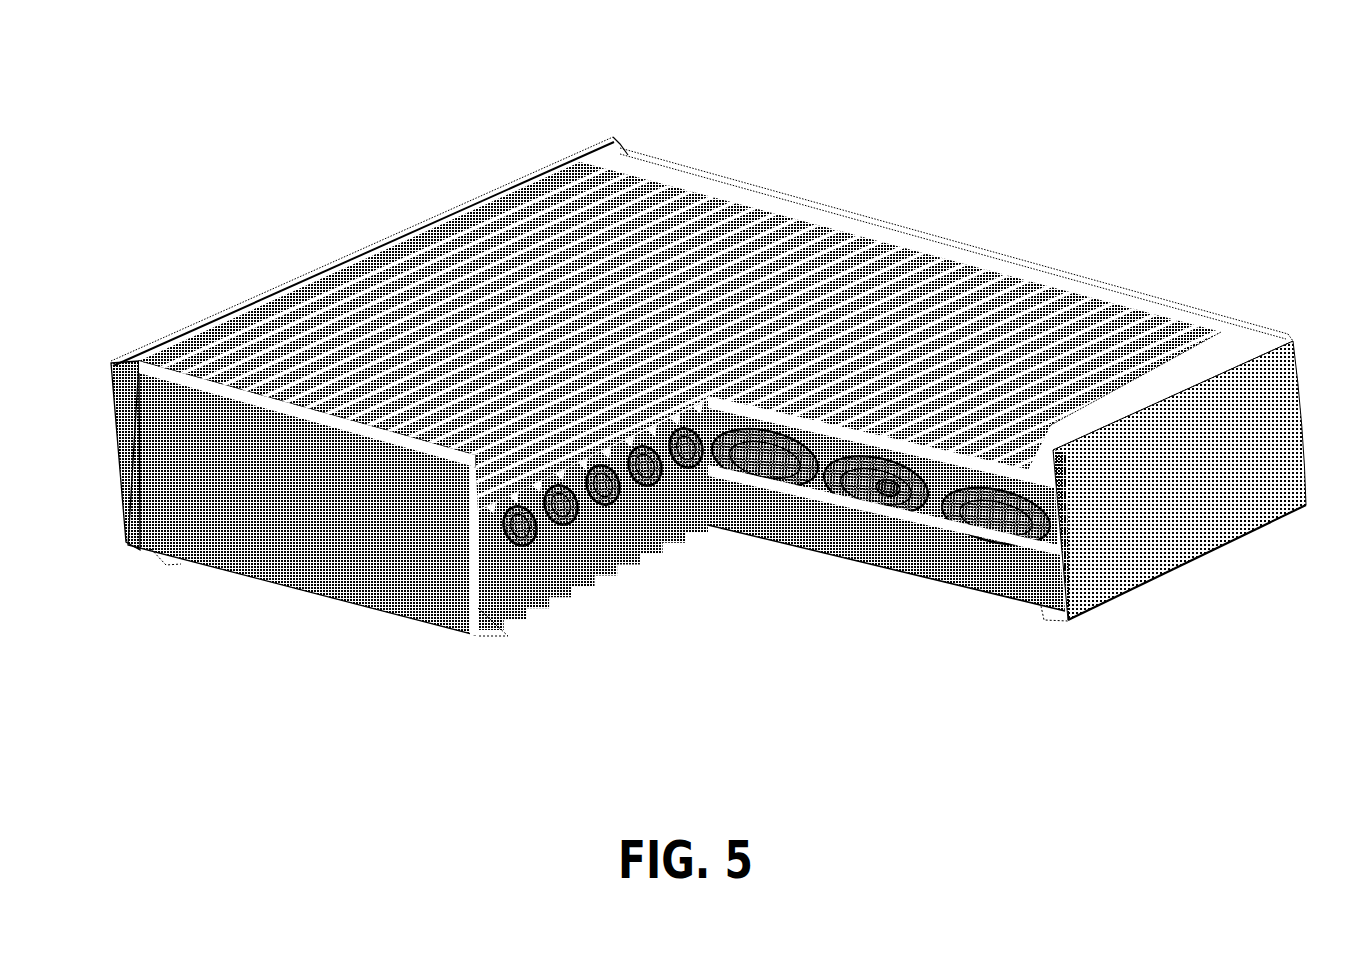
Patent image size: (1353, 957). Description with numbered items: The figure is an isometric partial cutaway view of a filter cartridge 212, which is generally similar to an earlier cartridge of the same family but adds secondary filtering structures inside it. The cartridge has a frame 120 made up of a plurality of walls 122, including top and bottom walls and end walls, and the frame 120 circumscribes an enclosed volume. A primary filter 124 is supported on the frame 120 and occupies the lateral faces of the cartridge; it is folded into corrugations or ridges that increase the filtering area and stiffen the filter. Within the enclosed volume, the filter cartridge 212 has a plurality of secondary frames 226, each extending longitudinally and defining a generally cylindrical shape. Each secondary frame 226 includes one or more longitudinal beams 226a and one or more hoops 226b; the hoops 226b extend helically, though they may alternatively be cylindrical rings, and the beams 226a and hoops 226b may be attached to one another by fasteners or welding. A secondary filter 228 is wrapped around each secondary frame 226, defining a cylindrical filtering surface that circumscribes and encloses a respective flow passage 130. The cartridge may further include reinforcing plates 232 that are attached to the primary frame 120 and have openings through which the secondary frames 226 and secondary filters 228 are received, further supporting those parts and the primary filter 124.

The filter cartridge 212 is at (726, 439).
The frame 120 is at (1196, 304).
The walls 122 is at (1117, 545).
The primary filter 124 is at (958, 518).
The flow passage 130 is at (603, 602).
The secondary frame 226 is at (882, 391).
The longitudinal beams 226a is at (790, 435).
The hoops 226b is at (975, 500).
The secondary filter 228 is at (880, 480).
The reinforcing plates 232 is at (478, 530).